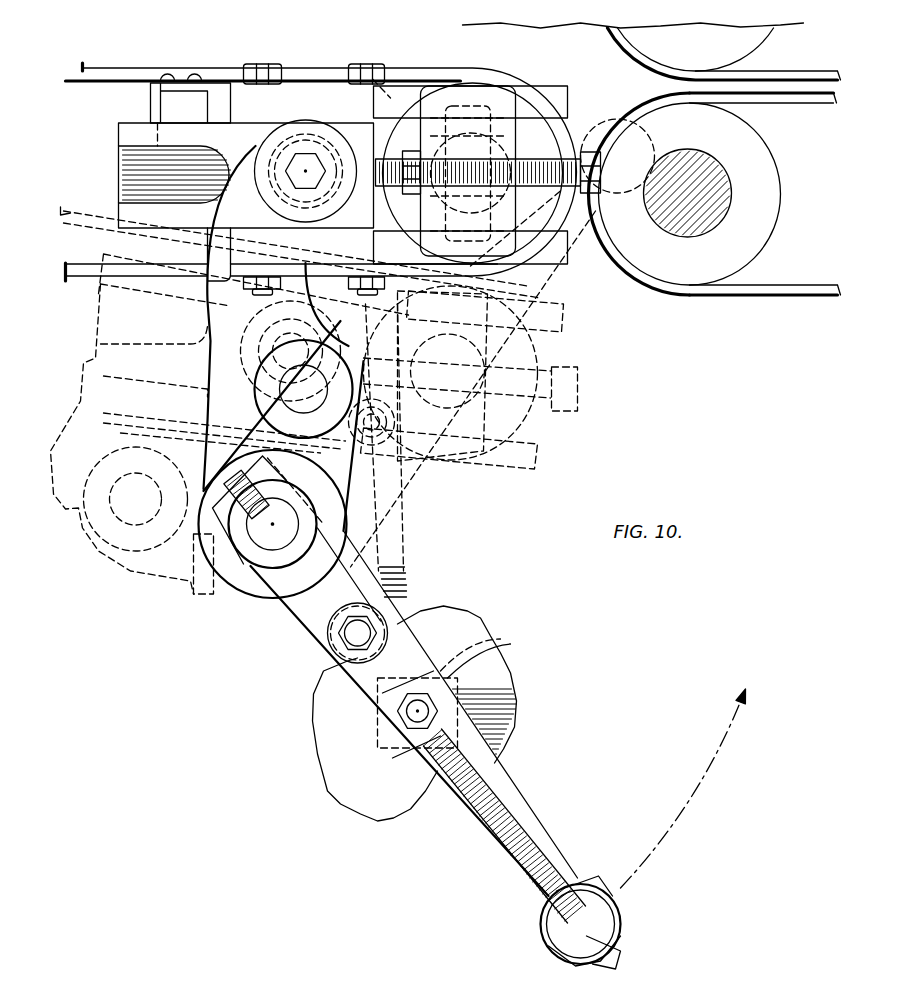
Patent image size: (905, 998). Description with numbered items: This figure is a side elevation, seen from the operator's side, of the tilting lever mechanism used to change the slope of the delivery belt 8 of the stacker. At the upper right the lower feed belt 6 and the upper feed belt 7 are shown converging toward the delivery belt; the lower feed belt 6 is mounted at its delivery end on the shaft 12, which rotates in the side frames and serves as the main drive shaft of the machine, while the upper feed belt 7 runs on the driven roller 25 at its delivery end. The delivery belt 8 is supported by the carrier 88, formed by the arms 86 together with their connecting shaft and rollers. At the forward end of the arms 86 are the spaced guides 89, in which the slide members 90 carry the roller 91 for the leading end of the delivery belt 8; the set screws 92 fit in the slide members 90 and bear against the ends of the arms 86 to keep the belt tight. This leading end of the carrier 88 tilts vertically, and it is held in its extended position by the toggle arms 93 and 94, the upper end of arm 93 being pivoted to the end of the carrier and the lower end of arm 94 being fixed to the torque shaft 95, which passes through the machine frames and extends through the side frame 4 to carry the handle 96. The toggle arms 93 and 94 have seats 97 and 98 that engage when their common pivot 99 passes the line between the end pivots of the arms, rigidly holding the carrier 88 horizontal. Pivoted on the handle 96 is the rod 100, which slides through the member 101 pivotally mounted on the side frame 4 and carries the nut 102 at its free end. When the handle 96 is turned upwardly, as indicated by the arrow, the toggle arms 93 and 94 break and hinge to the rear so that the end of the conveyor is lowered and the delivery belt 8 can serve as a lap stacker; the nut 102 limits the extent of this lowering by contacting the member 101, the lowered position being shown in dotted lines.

The side frame 4 is at (472, 618).
The lower feed belt 6 is at (795, 283).
The upper feed belt 7 is at (785, 68).
The delivery belt 8 is at (410, 68).
The shaft 12 is at (732, 182).
The driven roller 25 is at (633, 47).
The arms 86 is at (348, 130).
The carrier 88 is at (185, 133).
The spaced guides 89 is at (563, 92).
The slide members 90 is at (503, 102).
The roller 91 is at (386, 150).
The set screws 92 is at (527, 163).
The toggle arm 93 is at (296, 400).
The toggle arm 94 is at (228, 457).
The torque shaft 95 is at (257, 533).
The handle 96 is at (305, 612).
The seat 97 is at (215, 416).
The seat 98 is at (227, 446).
The common pivot 99 is at (297, 384).
The rod 100 is at (403, 572).
The member 101 is at (500, 638).
The nut 102 is at (400, 790).